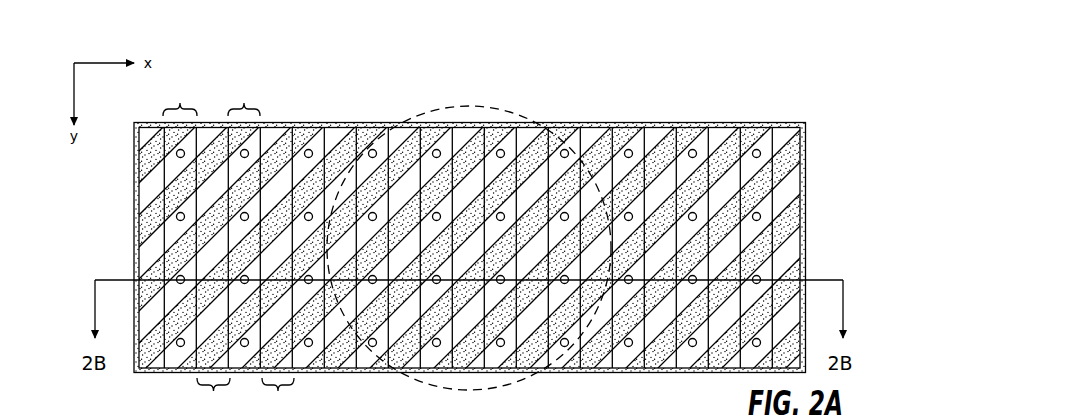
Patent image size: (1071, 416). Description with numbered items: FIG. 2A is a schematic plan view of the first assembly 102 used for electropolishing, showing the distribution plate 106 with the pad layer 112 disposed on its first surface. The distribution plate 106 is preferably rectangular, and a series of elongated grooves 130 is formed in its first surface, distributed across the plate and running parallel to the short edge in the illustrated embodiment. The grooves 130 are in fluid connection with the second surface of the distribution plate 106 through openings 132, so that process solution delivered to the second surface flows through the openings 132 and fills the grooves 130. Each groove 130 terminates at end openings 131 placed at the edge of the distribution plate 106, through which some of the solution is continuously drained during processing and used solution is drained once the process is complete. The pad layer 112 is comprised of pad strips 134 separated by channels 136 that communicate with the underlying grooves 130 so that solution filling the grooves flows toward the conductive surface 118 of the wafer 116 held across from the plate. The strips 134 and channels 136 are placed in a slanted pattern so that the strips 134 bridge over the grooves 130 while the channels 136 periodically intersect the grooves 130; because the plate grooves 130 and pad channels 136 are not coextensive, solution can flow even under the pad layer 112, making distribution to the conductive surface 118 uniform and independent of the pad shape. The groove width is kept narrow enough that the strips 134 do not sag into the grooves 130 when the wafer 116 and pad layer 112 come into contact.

The first assembly 102 is at (843, 133).
The distribution plate 106 is at (790, 118).
The pad layer 112 is at (685, 133).
The wafer 116 is at (497, 106).
The conductive surface 118 is at (229, 201).
The elongated grooves 130 is at (293, 163).
The end openings 131 is at (197, 101).
The openings 132 is at (377, 147).
The pad strips 134 is at (547, 125).
The channels 136 is at (598, 195).